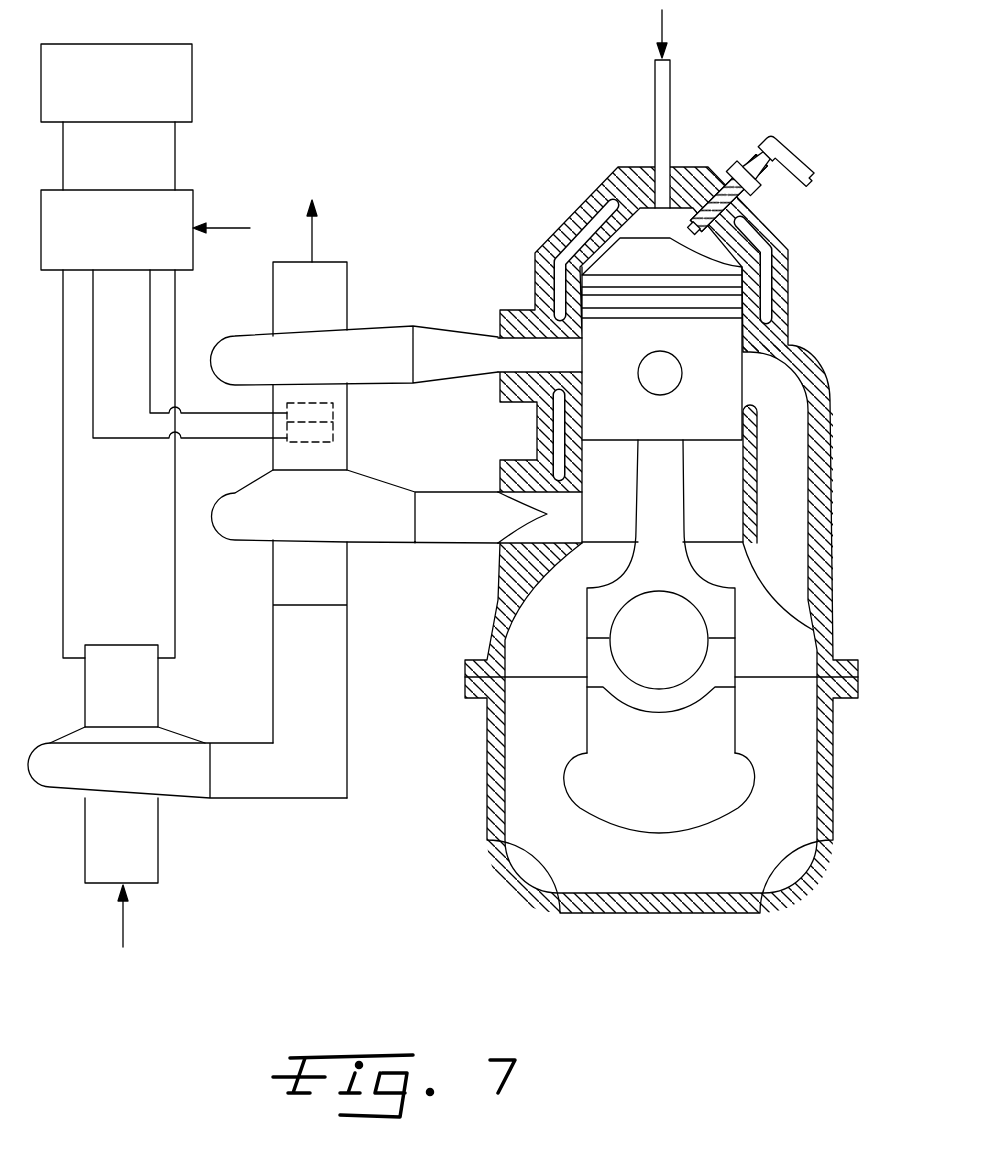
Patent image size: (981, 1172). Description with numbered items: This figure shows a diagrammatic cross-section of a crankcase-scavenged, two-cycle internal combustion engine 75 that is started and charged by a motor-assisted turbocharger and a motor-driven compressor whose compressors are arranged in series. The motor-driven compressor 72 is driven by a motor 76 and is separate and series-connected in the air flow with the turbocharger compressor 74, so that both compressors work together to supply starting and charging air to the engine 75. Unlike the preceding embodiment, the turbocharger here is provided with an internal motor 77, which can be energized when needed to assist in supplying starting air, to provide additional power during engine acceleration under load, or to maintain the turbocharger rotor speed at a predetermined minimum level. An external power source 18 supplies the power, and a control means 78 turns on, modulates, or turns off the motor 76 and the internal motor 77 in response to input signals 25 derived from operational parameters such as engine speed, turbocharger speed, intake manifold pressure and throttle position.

The external power source 18 is at (92, 98).
The control means 78 is at (98, 244).
The input signals 25 is at (233, 228).
The internal motor 77 is at (333, 416).
The turbocharger compressor 74 is at (400, 535).
The two-cycle internal combustion engine 75 is at (793, 318).
The motor 76 is at (93, 688).
The motor-driven compressor 72 is at (52, 782).